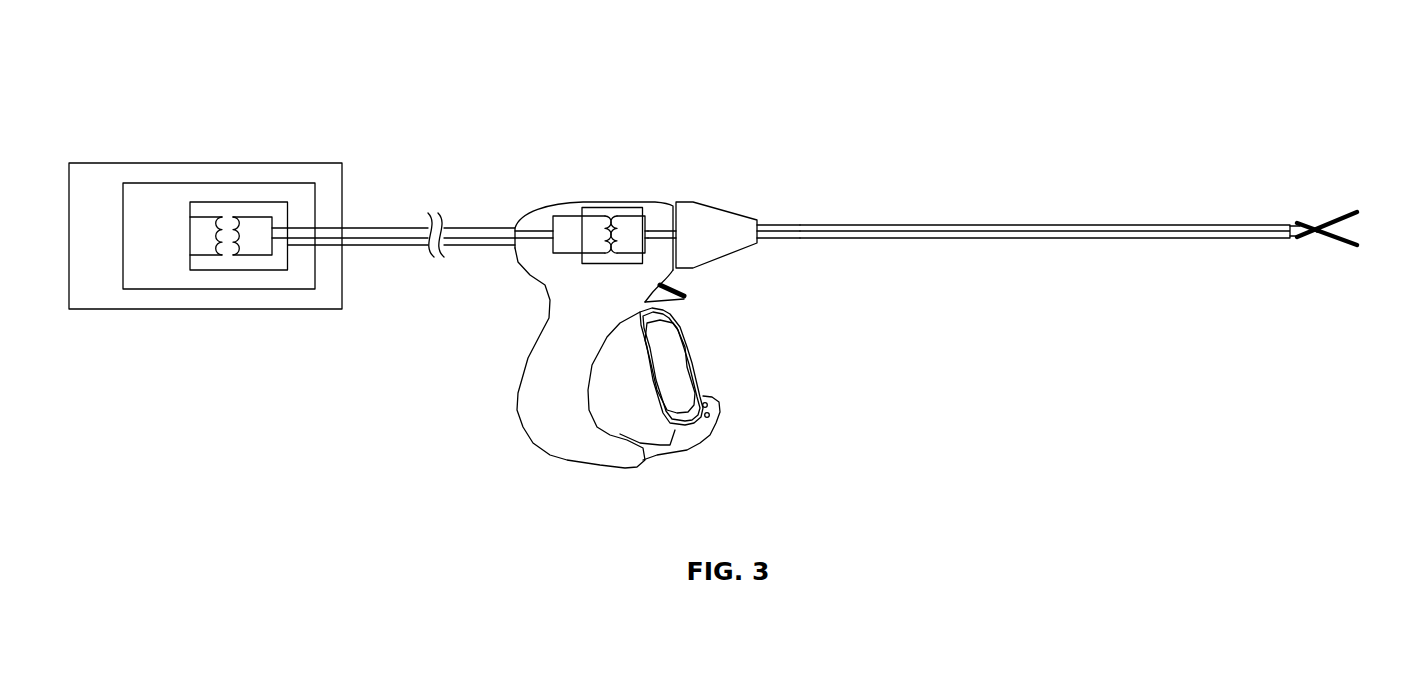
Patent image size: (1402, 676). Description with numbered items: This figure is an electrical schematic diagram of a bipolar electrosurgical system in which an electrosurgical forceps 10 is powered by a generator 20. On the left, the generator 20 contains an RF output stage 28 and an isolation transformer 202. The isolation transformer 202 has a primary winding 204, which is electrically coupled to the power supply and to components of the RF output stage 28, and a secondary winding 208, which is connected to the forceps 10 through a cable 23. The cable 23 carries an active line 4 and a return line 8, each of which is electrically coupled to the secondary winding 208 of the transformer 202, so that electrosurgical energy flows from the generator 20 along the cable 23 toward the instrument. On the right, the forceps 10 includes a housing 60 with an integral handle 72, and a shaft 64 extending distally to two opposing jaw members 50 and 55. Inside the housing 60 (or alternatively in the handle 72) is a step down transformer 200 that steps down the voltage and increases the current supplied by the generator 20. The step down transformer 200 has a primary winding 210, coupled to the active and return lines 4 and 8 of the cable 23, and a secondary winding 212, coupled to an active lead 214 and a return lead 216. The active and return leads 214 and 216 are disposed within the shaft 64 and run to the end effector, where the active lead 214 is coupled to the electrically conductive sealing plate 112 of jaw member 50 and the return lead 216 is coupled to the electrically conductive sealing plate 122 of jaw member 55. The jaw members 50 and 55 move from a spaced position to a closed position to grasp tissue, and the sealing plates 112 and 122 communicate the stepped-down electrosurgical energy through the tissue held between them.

The electrosurgical forceps 10 is at (944, 94).
The generator 20 is at (140, 310).
The RF output stage 28 is at (203, 182).
The isolation transformer 202 is at (270, 202).
The primary winding 204 is at (208, 257).
The secondary winding 208 is at (250, 257).
The active line 4 is at (380, 271).
The return line 8 is at (393, 262).
The cable 23 is at (398, 245).
The step down transformer 200 is at (588, 207).
The primary winding 210 is at (597, 263).
The secondary winding 212 is at (625, 263).
The housing 60 is at (660, 203).
The handle 72 is at (693, 367).
The active lead 214 is at (770, 268).
The return lead 216 is at (783, 254).
The shaft member 64 is at (1160, 223).
The jaw member 50 is at (1318, 222).
The jaw member 55 is at (1318, 240).
The electrically conductive sealing plate 112 is at (1348, 221).
The electrically conductive sealing plate 122 is at (1348, 236).